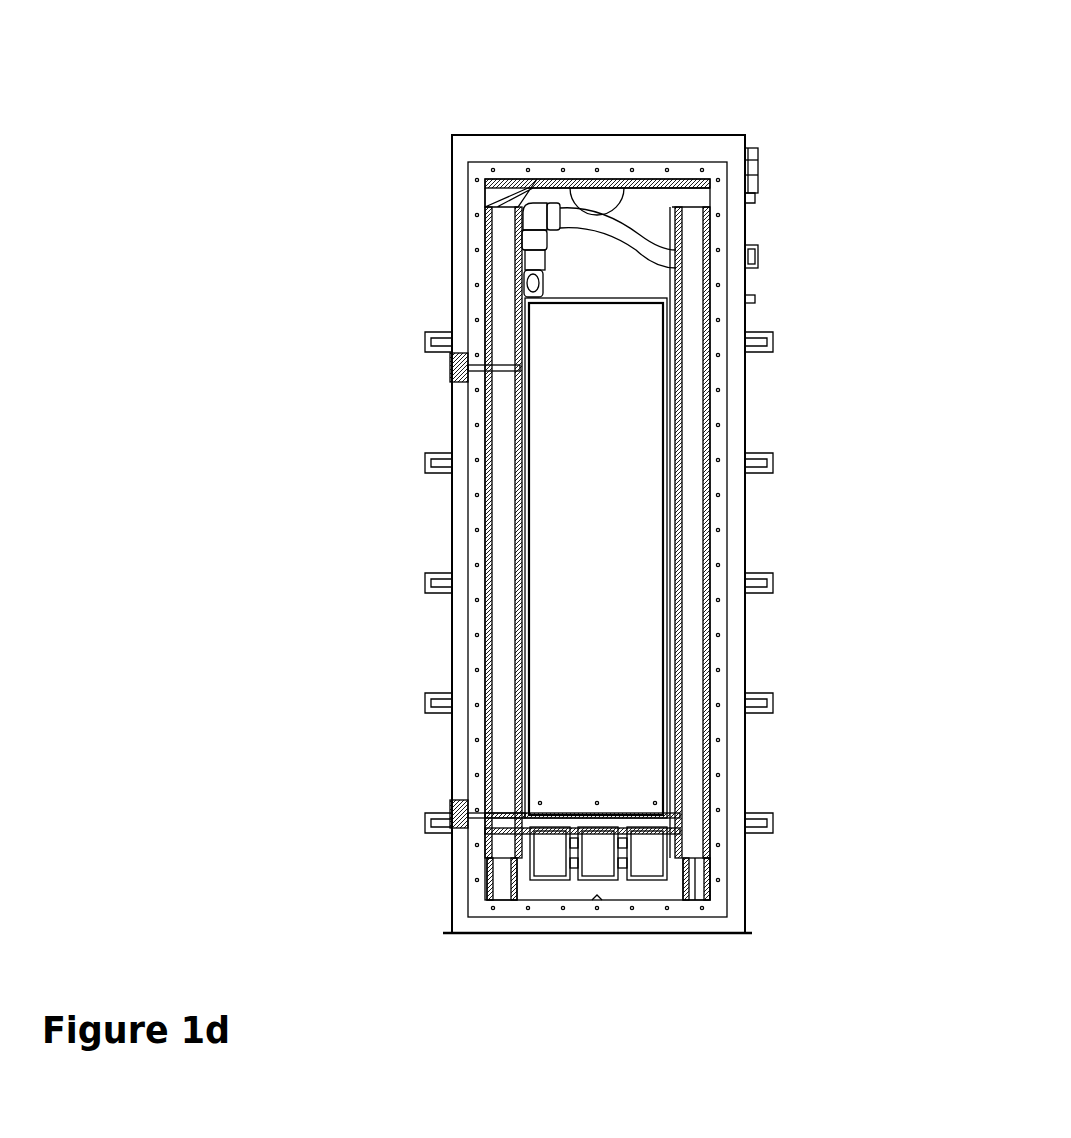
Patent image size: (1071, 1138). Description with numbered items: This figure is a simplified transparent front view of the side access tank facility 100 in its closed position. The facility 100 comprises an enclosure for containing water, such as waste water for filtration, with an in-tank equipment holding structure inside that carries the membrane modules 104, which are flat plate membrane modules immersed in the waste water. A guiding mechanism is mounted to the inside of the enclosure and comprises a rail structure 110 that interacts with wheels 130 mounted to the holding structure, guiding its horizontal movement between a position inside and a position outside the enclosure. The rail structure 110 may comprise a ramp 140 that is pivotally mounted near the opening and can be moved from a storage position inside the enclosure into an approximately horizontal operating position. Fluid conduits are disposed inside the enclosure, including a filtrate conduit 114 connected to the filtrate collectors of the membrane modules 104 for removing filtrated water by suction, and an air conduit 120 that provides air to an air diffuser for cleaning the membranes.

The side access tank facility 100 is at (608, 509).
The air conduit 120 is at (752, 155).
The filtrate conduit 114 is at (755, 258).
The ramp 140 is at (505, 458).
The membrane modules 104 is at (622, 613).
The rail structure 110 is at (667, 887).
The wheels 130 is at (505, 880).